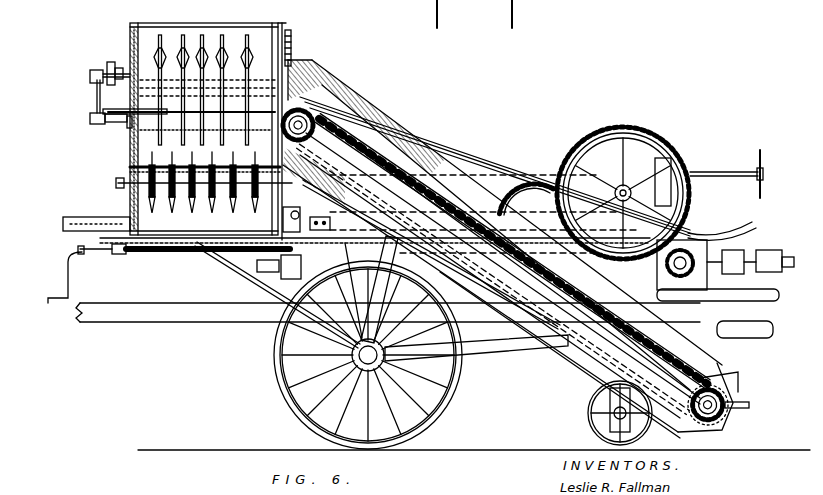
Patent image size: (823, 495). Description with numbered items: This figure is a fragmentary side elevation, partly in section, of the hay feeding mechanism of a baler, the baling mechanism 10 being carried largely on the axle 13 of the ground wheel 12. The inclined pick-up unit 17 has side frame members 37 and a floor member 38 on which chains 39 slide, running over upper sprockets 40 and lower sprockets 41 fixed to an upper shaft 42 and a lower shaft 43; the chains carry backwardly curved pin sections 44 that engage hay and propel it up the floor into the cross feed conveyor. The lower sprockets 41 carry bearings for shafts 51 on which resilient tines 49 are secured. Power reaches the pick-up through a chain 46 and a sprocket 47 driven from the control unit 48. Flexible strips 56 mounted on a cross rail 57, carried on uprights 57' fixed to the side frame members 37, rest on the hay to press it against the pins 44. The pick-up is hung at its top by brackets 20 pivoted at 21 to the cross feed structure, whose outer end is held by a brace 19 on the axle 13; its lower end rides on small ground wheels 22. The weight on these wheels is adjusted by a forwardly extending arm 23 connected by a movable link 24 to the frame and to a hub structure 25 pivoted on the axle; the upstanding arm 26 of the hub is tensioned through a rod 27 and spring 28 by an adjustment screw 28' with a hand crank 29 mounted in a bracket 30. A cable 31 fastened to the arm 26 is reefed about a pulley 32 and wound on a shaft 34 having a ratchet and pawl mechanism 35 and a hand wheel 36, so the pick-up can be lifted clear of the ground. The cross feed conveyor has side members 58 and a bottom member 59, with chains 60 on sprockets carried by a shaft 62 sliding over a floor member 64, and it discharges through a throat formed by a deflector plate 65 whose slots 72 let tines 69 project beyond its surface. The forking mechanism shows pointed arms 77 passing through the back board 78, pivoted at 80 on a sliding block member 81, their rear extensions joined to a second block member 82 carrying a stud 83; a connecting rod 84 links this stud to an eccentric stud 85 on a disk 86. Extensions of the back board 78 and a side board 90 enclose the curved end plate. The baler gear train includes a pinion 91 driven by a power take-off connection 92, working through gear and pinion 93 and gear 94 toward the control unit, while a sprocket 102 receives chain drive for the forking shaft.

The baling mechanism 10 is at (128, 318).
The ground wheel 12 is at (300, 412).
The axle 13 is at (362, 372).
The inclined pick-up unit 17 is at (400, 130).
The brace 19 is at (240, 268).
The brackets 20 is at (330, 198).
The pivotal attachment 21 is at (330, 225).
The ground wheels 22 is at (588, 413).
The forwardly extending arm 23 is at (505, 350).
The movable link 24 is at (592, 366).
The hub structure 25 is at (440, 398).
The arm 26 is at (390, 272).
The rod 27 is at (268, 274).
The spring 28 is at (185, 263).
The adjustment screw 28' is at (129, 267).
The hand crank 29 is at (72, 277).
The bracket 30 is at (84, 256).
The cable 31 is at (347, 262).
The pulley 32 is at (292, 280).
The shaft 34 is at (710, 172).
The ratchet and pawl mechanism 35 is at (666, 182).
The hand wheel 36 is at (762, 160).
The side frame members 37 is at (440, 142).
The floor member 38 is at (412, 192).
The chains 39 is at (350, 130).
The upper sprockets 40 is at (320, 90).
The lower sprockets 41 is at (718, 420).
The upper shaft 42 is at (318, 115).
The lower shaft 43 is at (726, 392).
The pin sections 44 is at (433, 190).
The chain 46 is at (612, 340).
The sprocket 47 is at (440, 205).
The control unit 48 is at (482, 300).
The tines 49 is at (750, 405).
The shafts 51 is at (730, 403).
The rod 56 is at (490, 166).
The cross rail 57 is at (720, 210).
The uprights 57' is at (722, 220).
The side members 58 is at (130, 216).
The bottom member 59 is at (235, 232).
The chains 60 is at (150, 162).
The shaft 62 is at (118, 185).
The floor member 64 is at (145, 170).
The deflector plate 65 is at (132, 50).
The tines 69 is at (160, 135).
The slots 72 is at (280, 27).
The pointed arms 77 is at (145, 110).
The back board 78 is at (133, 43).
The pivot 80 is at (110, 110).
The block member 81 is at (128, 126).
The second block member 82 is at (112, 121).
The stud 83 is at (90, 118).
The connecting rod 84 is at (97, 90).
The stud 85 is at (92, 72).
The disk 86 is at (109, 62).
The side board 90 is at (283, 215).
The pinion 91 is at (720, 252).
The power take-off connection 92 is at (772, 258).
The gear and pinion 93 is at (645, 128).
The gear 94 is at (528, 183).
The sprocket 102 is at (292, 45).